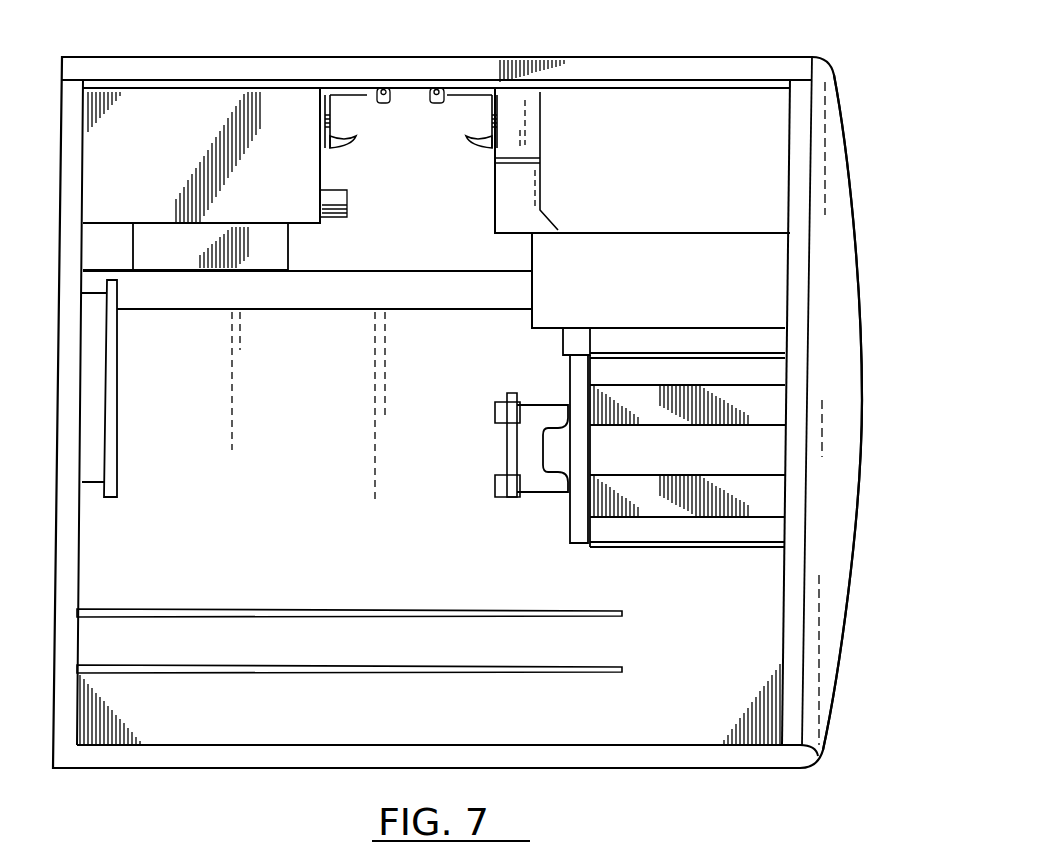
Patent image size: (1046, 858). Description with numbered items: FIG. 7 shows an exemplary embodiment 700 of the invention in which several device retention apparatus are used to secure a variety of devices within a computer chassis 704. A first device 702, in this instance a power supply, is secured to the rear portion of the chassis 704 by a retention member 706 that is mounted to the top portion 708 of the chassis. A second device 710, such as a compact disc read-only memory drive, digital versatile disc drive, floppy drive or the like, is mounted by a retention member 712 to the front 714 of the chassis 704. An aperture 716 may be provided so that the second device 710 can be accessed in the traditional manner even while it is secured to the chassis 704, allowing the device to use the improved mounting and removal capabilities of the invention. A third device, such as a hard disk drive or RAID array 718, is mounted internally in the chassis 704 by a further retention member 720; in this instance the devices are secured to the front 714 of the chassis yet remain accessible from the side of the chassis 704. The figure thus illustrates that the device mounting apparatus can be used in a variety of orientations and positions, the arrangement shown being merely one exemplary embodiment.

The exemplary embodiment 700 is at (805, 780).
The first device 702 is at (174, 186).
The chassis 704 is at (279, 54).
The retention member 706 is at (353, 90).
The top portion 708 is at (645, 70).
The second device 710 is at (706, 175).
The retention member 712 is at (467, 90).
The front 714 is at (792, 108).
The aperture 716 is at (850, 147).
The RAID array 718 is at (705, 466).
The retention member 720 is at (510, 448).